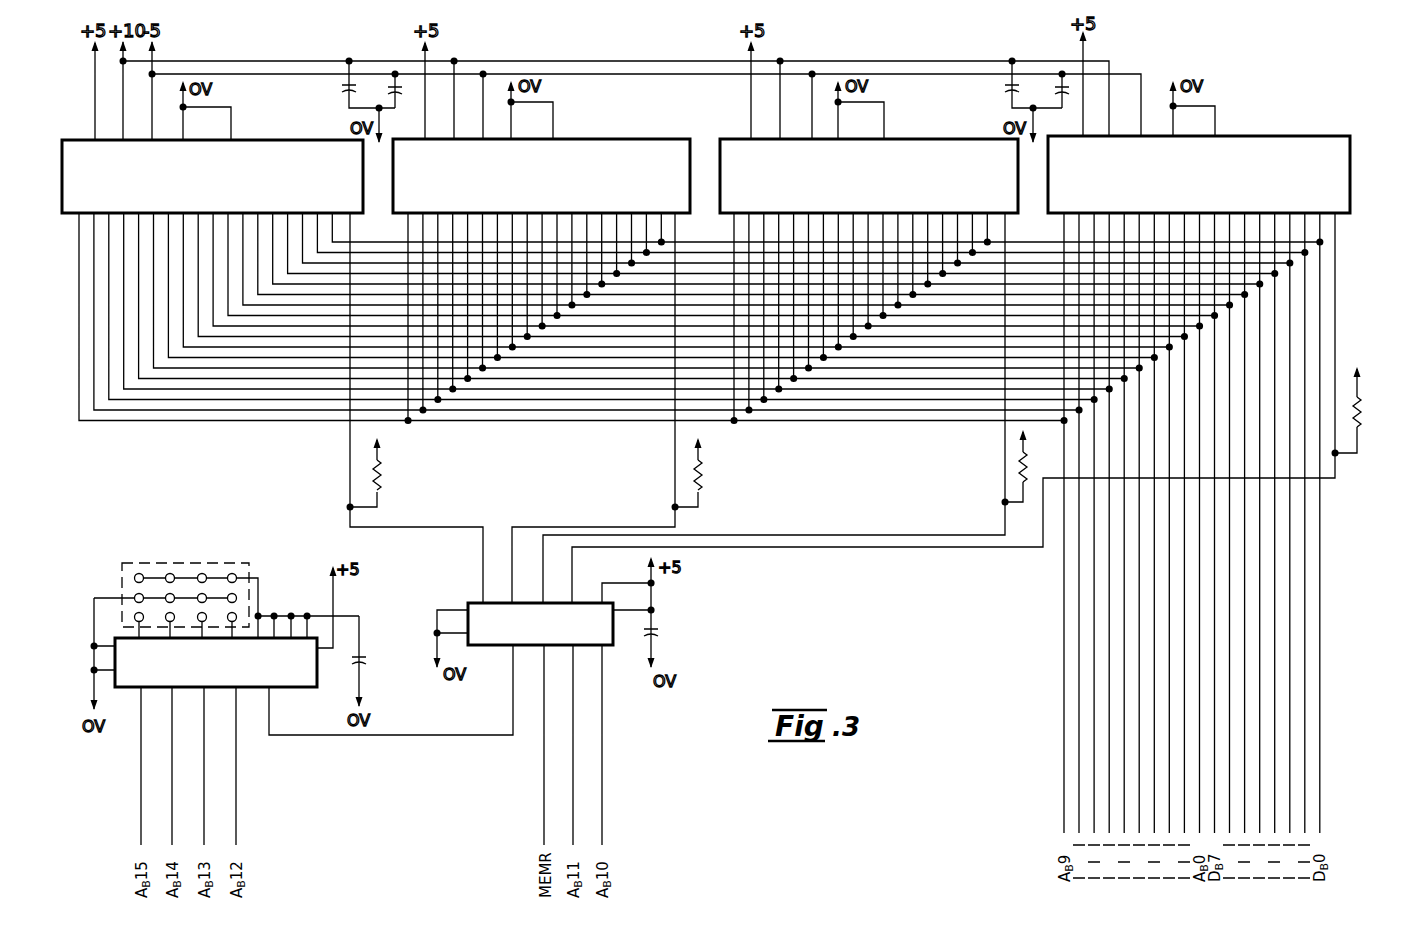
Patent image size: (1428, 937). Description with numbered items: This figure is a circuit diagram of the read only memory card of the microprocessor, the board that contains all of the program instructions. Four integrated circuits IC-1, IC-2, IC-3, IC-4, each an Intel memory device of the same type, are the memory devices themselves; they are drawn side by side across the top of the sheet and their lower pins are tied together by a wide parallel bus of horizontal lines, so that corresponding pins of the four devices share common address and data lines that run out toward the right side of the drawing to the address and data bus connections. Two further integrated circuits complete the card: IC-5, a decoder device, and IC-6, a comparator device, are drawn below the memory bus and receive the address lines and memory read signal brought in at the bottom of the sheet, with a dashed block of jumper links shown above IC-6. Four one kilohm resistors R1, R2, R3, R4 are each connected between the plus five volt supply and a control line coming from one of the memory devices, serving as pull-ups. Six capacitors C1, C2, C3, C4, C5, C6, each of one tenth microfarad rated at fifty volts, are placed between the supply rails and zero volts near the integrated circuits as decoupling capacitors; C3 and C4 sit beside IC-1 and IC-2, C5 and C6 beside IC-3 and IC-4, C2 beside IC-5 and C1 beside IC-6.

The integrated circuit IC-1 is at (212, 176).
The integrated circuit IC-2 is at (541, 176).
The integrated circuit IC-3 is at (869, 176).
The integrated circuit IC-4 is at (1199, 174).
The integrated circuit IC-5 is at (540, 624).
The integrated circuit IC-6 is at (216, 662).
The capacitor C1 is at (374, 661).
The capacitor C2 is at (673, 639).
The capacitor C3 is at (356, 85).
The capacitor C4 is at (404, 92).
The capacitor C5 is at (1018, 85).
The capacitor C6 is at (1066, 102).
The resistor R1 is at (381, 472).
The resistor R2 is at (704, 472).
The resistor R3 is at (1029, 466).
The resistor R4 is at (1364, 400).